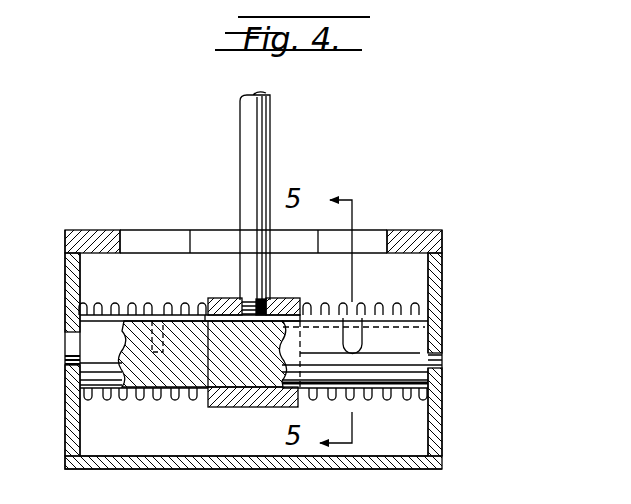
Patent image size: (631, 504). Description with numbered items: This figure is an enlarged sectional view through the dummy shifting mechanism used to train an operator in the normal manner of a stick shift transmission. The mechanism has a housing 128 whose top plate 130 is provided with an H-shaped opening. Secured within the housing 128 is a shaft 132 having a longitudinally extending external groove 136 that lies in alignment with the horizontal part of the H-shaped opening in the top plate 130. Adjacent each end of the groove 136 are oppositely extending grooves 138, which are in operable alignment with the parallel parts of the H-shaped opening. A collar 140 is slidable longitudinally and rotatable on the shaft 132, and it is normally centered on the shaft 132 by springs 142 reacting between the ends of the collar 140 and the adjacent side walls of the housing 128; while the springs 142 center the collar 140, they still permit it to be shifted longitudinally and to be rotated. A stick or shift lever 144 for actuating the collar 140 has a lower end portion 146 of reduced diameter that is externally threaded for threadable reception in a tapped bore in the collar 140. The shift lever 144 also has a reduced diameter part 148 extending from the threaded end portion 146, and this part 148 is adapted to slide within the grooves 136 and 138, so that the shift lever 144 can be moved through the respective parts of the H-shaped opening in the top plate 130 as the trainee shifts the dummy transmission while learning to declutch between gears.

The housing 128 is at (450, 282).
The top plate 130 is at (405, 232).
The shaft 132 is at (425, 336).
The longitudinally extending external groove 136 is at (318, 302).
The oppositely extending grooves 138 is at (157, 314).
The collar 140 is at (235, 407).
The spring 142 is at (156, 404).
The shift lever 144 is at (266, 123).
The lower end portion 146 is at (252, 298).
The reduced diameter part 148 is at (277, 320).